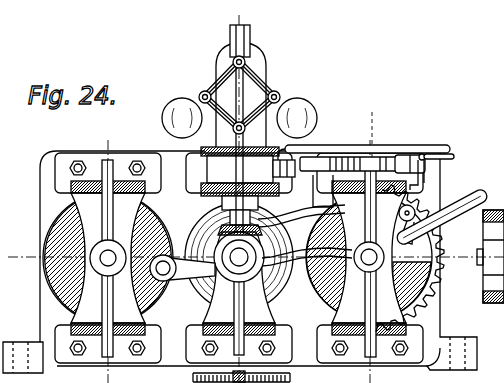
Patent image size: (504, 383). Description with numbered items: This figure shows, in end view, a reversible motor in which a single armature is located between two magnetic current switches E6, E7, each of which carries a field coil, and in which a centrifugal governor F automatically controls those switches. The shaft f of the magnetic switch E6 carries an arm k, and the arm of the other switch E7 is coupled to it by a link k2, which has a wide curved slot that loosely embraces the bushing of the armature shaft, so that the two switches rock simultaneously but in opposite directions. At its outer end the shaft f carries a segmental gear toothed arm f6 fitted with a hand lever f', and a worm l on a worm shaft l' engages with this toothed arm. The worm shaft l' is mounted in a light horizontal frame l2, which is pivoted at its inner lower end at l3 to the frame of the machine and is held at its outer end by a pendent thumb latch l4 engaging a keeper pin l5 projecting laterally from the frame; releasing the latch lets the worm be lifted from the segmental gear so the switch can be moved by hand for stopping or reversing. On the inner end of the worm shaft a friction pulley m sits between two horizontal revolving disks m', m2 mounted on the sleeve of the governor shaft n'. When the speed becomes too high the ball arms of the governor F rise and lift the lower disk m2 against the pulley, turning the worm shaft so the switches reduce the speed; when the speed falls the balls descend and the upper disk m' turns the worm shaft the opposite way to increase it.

The centrifugal governor F is at (239, 86).
The governor shaft n' is at (239, 95).
The upper revolving disk m' is at (240, 143).
The lower revolving disk m2 is at (240, 182).
The friction pulley m is at (291, 177).
The worm l is at (360, 147).
The worm shaft l' is at (364, 140).
The horizontal frame l2 is at (400, 154).
The pivot l3 is at (305, 220).
The pendent thumb latch l4 is at (455, 156).
The keeper pin l5 is at (434, 175).
The shaft of magnetic switch f is at (369, 257).
The hand lever f' is at (444, 208).
The segmental gear toothed arm f6 is at (410, 256).
The arm k is at (150, 268).
The link k2 is at (275, 245).
The magnetic switch E6 is at (440, 312).
The magnetic switch E7 is at (48, 235).